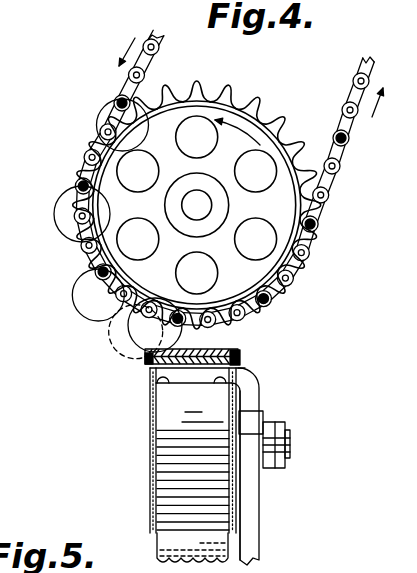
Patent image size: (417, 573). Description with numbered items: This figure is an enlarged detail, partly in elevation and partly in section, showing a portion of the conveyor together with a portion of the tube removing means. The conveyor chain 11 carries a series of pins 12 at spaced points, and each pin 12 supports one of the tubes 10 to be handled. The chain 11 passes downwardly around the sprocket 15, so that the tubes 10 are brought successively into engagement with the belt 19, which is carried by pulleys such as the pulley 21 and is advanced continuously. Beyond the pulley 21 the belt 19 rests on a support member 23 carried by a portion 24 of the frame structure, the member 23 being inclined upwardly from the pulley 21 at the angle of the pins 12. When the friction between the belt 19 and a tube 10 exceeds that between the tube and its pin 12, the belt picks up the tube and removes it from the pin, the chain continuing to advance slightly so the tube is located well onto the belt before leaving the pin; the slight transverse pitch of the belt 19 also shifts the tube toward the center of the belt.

The tubes 10 is at (96, 116).
The chain 11 is at (154, 52).
The pins 12 is at (117, 98).
The sprocket 15 is at (280, 120).
The belt 19 is at (258, 331).
The pulley 21 is at (150, 432).
The support member 23 is at (206, 352).
The frame portion 24 is at (259, 392).